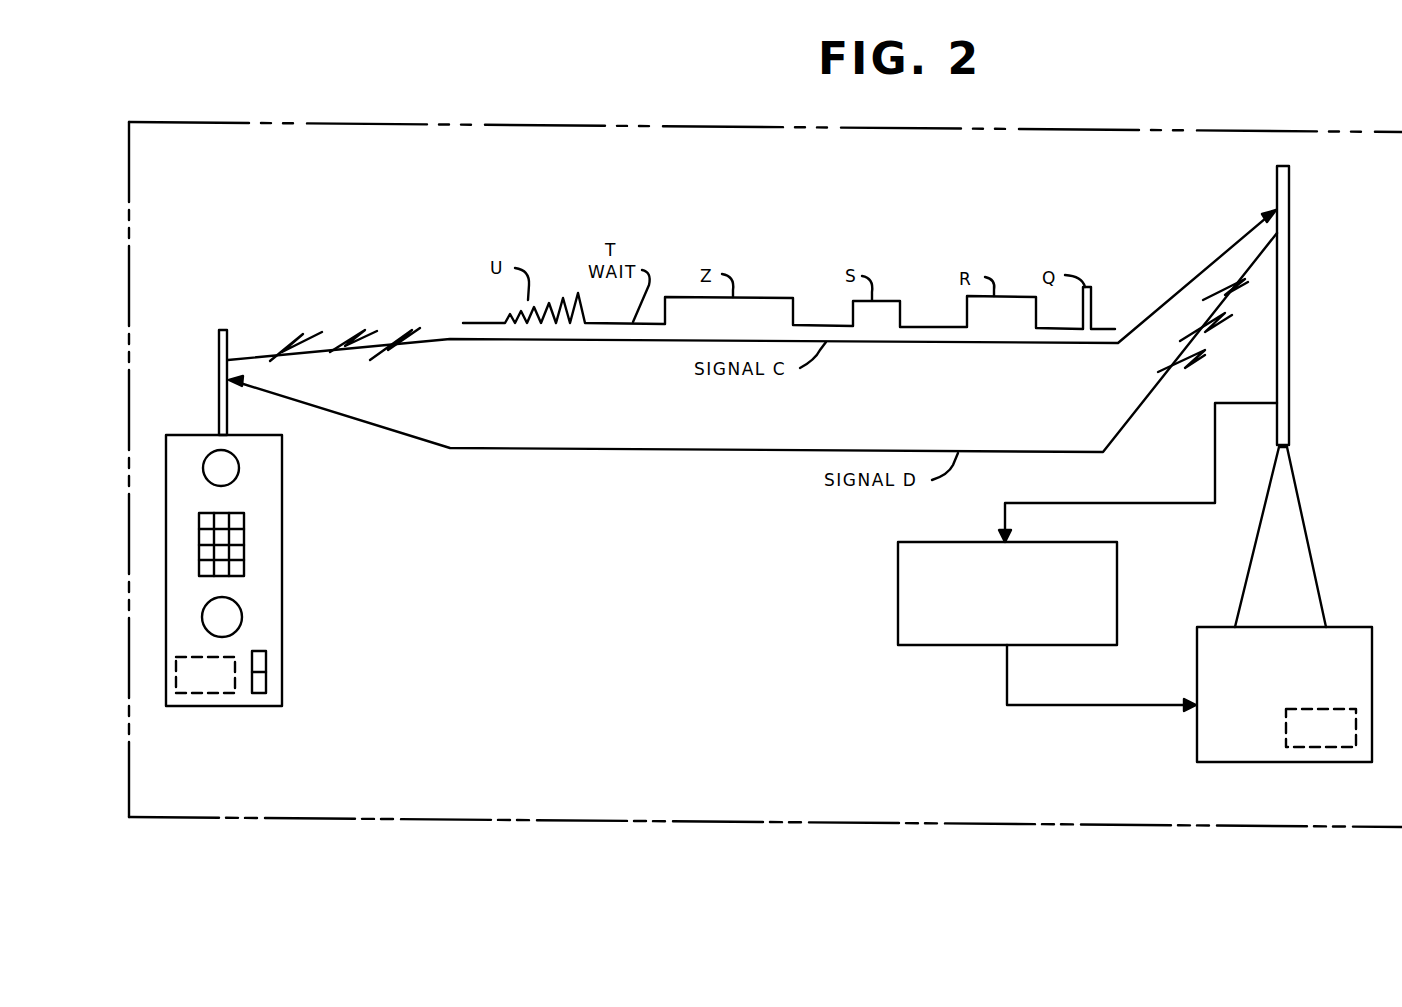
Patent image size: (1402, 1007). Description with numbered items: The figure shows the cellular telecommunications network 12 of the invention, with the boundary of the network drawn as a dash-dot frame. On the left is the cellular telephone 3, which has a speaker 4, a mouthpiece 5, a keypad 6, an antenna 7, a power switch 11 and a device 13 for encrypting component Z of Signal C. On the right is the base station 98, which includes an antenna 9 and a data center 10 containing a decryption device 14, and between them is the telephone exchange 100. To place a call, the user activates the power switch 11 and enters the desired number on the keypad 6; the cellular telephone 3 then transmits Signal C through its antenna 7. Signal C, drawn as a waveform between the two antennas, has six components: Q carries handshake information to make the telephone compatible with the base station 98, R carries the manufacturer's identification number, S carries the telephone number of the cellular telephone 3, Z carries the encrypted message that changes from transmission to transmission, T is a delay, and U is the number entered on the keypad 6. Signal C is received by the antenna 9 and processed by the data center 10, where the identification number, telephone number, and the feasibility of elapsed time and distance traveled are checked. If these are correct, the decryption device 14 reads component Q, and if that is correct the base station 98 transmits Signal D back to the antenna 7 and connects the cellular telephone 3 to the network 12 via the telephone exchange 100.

The cellular telephone 3 is at (283, 521).
The speaker 4 is at (215, 452).
The mouthpiece 5 is at (242, 619).
The keypad 6 is at (244, 553).
The antenna 7 is at (219, 347).
The antenna 9 is at (1289, 297).
The data center 10 is at (1262, 762).
The power switch 11 is at (266, 680).
The cellular telecommunications network 12 is at (331, 122).
The encrypting device 13 is at (227, 693).
The decryption device 14 is at (1342, 752).
The base station 98 is at (1333, 413).
The telephone exchange 100 is at (898, 607).